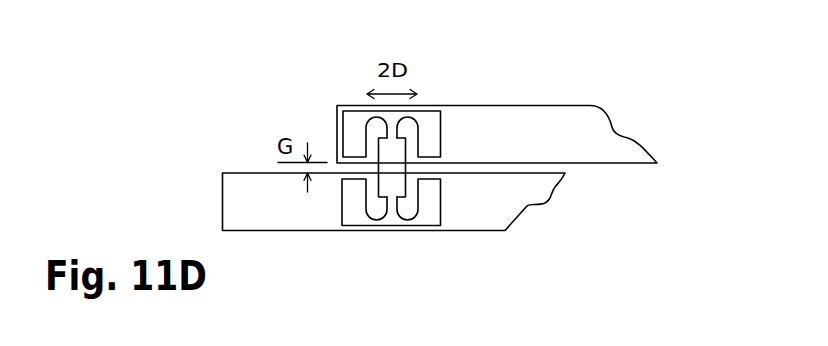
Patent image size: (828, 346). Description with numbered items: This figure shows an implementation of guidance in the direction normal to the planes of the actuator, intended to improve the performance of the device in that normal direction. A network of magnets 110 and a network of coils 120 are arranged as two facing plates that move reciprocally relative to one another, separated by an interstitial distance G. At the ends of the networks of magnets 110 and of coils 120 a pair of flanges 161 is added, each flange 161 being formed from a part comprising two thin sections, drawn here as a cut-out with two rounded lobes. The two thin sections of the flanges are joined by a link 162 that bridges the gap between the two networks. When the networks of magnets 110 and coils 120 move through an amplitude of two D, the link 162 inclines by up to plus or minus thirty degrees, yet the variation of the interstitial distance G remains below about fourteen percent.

The network of magnets 110 is at (528, 106).
The network of coils 120 is at (465, 231).
The flange 161 is at (429, 130).
The link 162 is at (388, 187).